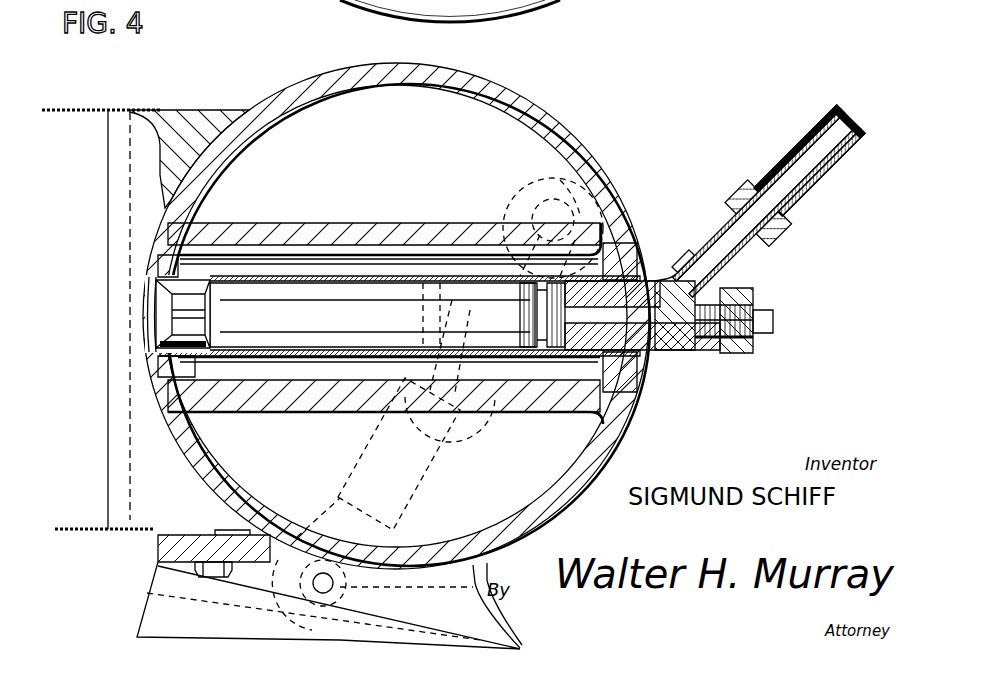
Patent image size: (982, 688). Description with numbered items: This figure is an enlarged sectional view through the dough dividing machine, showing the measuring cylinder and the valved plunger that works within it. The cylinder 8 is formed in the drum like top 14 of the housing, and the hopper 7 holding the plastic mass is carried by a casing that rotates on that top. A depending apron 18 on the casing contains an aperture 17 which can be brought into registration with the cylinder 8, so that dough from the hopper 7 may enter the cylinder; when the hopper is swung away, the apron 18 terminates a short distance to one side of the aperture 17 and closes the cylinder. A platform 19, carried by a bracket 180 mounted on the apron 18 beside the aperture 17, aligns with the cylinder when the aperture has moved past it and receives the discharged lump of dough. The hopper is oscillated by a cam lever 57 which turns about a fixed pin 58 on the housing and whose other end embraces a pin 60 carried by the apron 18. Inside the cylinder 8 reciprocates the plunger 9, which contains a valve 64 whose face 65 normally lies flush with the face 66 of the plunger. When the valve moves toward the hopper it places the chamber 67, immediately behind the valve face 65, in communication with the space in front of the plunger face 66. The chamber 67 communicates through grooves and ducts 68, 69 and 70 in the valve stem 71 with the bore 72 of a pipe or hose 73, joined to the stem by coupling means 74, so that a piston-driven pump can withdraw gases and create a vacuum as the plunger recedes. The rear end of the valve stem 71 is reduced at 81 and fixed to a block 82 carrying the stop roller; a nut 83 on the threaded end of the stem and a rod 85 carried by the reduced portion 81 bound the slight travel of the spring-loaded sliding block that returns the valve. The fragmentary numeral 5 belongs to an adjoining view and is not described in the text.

The fragment of adjacent figure 5 is at (636, 27).
The hopper 7 is at (100, 108).
The cylinder 8 is at (343, 241).
The plunger 9 is at (190, 222).
The drum like top 14 is at (551, 114).
The aperture 17 is at (130, 110).
The apron 18 is at (185, 110).
The platform 19 is at (138, 614).
The cam lever 57 is at (474, 438).
The fixed pin 58 is at (584, 186).
The pin 60 is at (323, 580).
The valve 64 is at (163, 297).
The valve face 65 is at (147, 308).
The plunger face 66 is at (157, 253).
The chamber 67 is at (187, 343).
The groove 68 is at (317, 254).
The duct 69 is at (441, 253).
The duct 70 is at (519, 315).
The valve stem 71 is at (302, 296).
The bore 72 is at (820, 150).
The pipe or hose 73 is at (827, 122).
The coupling means 74 is at (795, 223).
The reduced portion 81 is at (707, 347).
The block 82 is at (683, 350).
The nut 83 is at (738, 355).
The rod 85 is at (767, 313).
The bracket 180 is at (157, 560).